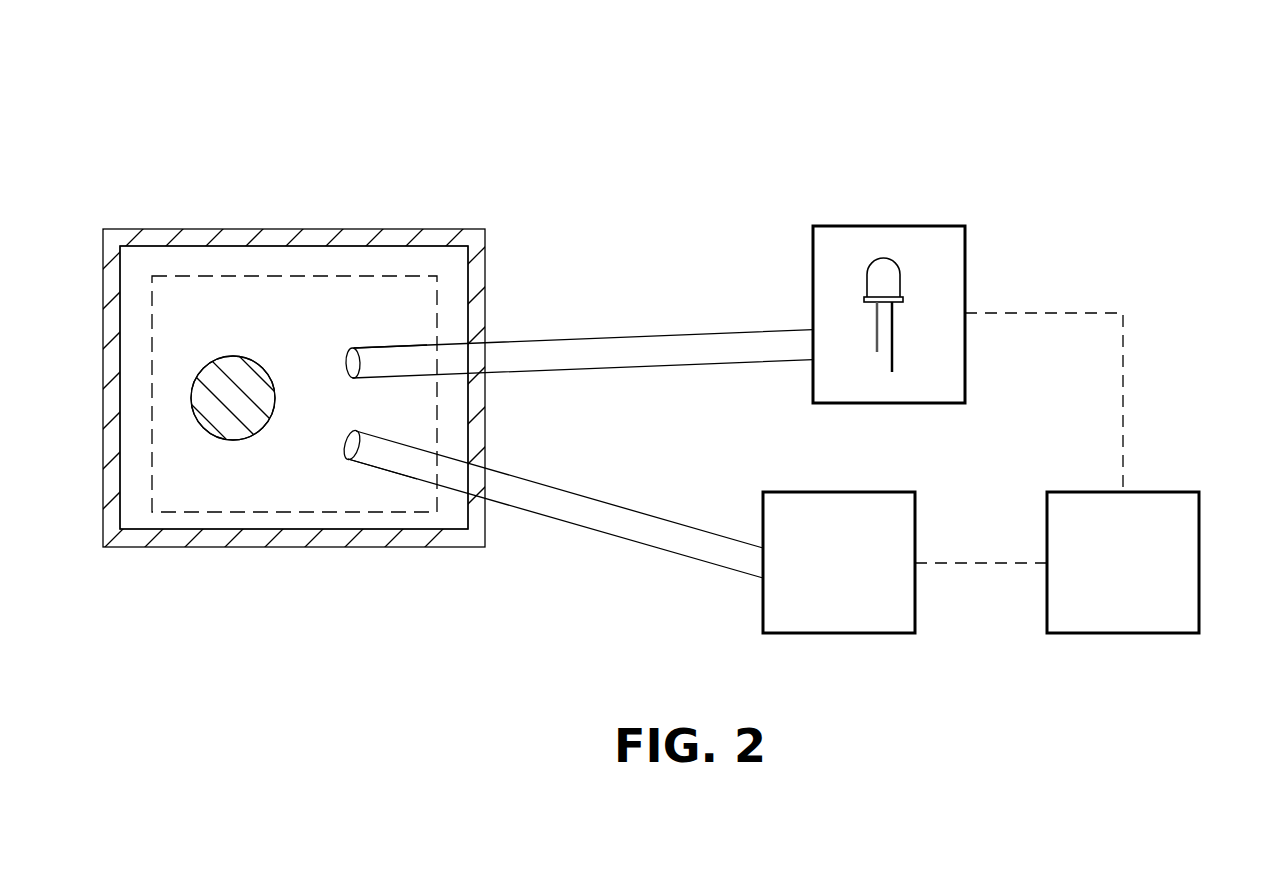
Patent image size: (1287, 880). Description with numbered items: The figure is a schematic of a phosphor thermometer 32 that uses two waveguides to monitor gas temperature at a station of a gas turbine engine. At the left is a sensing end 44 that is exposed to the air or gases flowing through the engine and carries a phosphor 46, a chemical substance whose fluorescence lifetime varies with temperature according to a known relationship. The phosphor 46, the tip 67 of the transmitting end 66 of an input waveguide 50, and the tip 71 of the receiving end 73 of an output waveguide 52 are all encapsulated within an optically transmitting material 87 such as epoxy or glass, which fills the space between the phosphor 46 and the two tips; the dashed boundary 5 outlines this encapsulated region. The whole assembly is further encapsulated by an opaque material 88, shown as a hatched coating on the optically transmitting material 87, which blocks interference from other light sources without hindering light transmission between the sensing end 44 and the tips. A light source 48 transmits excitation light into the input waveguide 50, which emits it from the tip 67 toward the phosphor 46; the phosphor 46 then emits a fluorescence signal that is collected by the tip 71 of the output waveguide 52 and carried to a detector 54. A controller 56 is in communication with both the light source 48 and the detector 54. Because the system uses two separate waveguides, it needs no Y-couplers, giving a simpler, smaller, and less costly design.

The phosphor thermometer 32 is at (722, 113).
The sample chamber region 5 is at (152, 320).
The optically transmitting material 87 is at (202, 313).
The opaque material 88 is at (392, 229).
The phosphor 46 is at (237, 364).
The sensing end 44 is at (240, 440).
The input waveguide 50 is at (587, 338).
The tip 67 is at (350, 360).
The transmitting end 66 is at (352, 342).
The output waveguide 52 is at (592, 530).
The tip 71 is at (350, 443).
The receiving end 73 is at (378, 490).
The light source 48 is at (888, 224).
The detector 54 is at (838, 633).
The controller 56 is at (1199, 582).